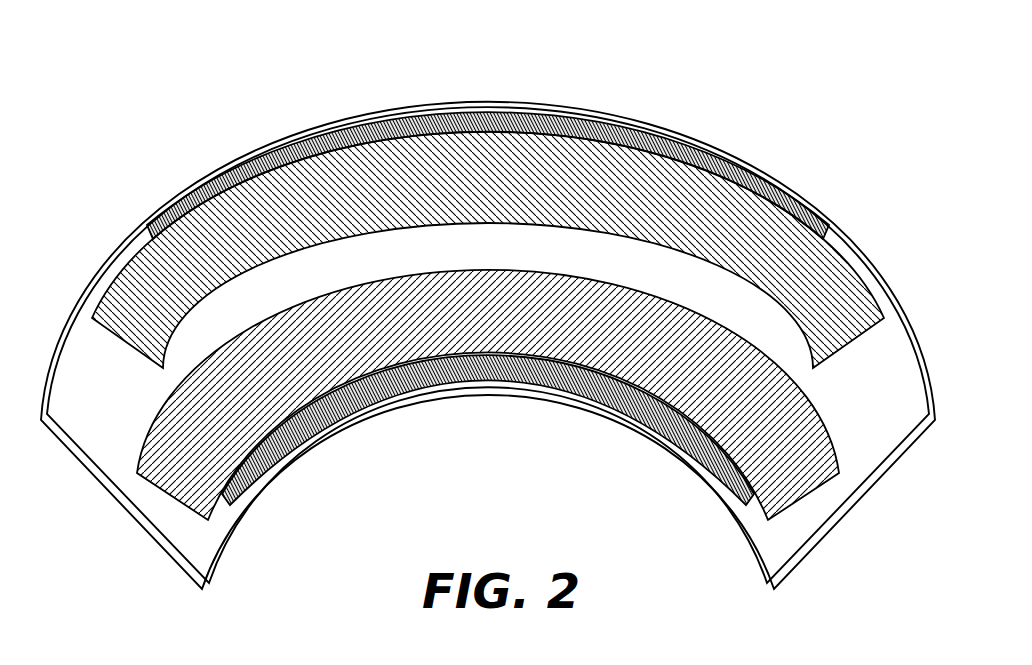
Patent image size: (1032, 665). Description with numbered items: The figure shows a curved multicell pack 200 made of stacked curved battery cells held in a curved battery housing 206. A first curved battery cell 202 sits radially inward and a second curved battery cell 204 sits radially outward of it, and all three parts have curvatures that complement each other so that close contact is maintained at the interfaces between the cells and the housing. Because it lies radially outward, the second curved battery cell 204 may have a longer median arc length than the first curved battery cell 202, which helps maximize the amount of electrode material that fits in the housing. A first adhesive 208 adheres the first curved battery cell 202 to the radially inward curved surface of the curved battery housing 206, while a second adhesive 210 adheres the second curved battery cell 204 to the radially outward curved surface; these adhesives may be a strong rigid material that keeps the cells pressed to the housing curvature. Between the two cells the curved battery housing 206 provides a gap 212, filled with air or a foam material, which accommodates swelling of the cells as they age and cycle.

The curved multicell pack 200 is at (502, 44).
The first curved battery cell 202 is at (207, 478).
The second curved battery cell 204 is at (113, 283).
The curved battery housing 206 is at (173, 197).
The first adhesive 208 is at (622, 417).
The second adhesive 210 is at (738, 160).
The gap 212 is at (223, 327).